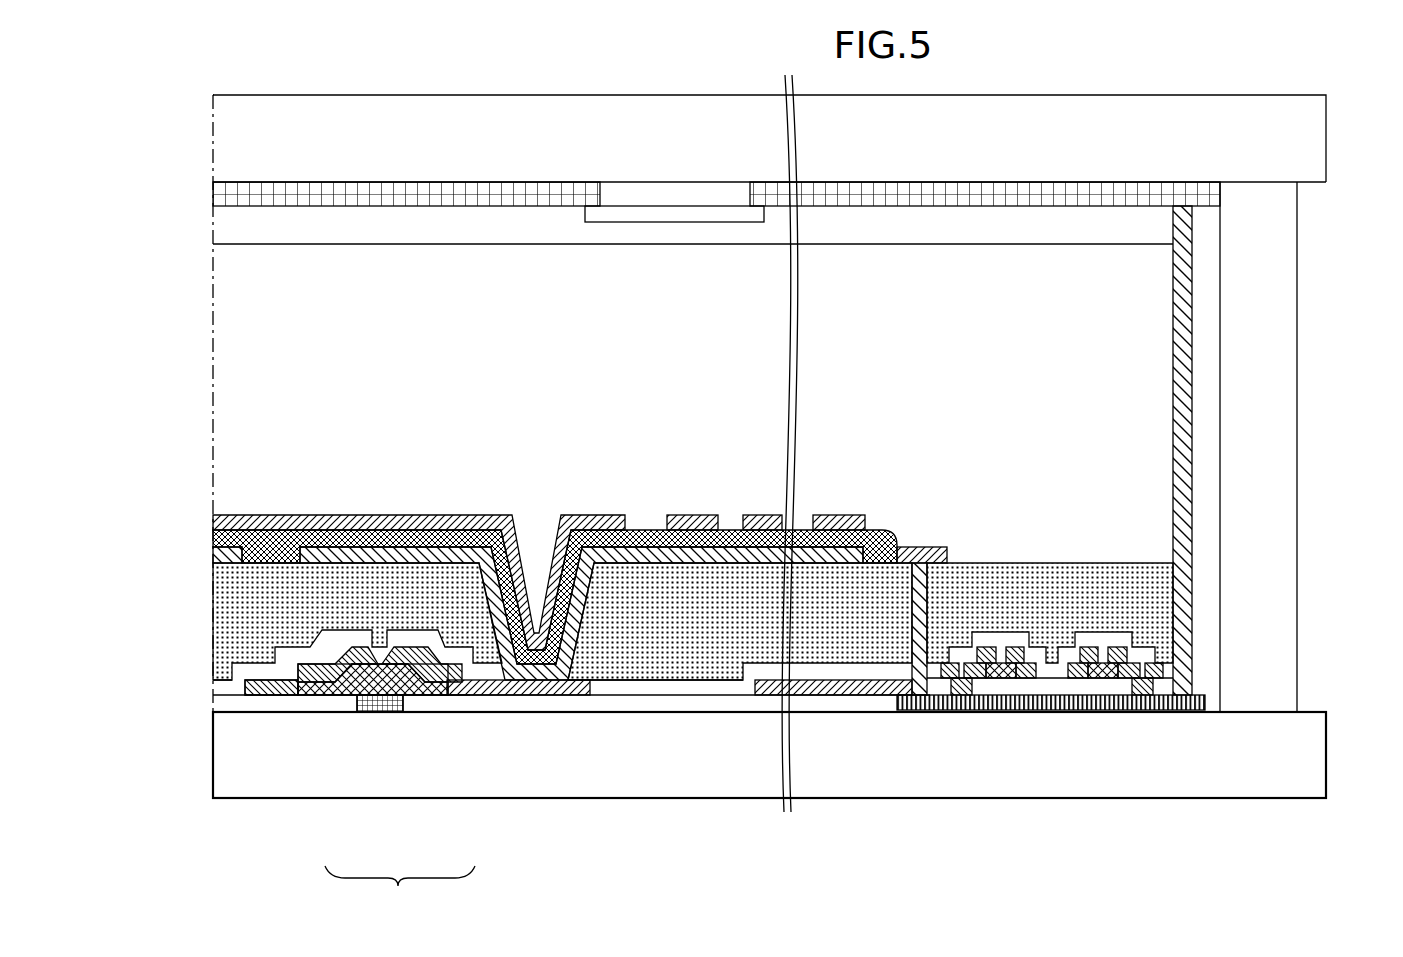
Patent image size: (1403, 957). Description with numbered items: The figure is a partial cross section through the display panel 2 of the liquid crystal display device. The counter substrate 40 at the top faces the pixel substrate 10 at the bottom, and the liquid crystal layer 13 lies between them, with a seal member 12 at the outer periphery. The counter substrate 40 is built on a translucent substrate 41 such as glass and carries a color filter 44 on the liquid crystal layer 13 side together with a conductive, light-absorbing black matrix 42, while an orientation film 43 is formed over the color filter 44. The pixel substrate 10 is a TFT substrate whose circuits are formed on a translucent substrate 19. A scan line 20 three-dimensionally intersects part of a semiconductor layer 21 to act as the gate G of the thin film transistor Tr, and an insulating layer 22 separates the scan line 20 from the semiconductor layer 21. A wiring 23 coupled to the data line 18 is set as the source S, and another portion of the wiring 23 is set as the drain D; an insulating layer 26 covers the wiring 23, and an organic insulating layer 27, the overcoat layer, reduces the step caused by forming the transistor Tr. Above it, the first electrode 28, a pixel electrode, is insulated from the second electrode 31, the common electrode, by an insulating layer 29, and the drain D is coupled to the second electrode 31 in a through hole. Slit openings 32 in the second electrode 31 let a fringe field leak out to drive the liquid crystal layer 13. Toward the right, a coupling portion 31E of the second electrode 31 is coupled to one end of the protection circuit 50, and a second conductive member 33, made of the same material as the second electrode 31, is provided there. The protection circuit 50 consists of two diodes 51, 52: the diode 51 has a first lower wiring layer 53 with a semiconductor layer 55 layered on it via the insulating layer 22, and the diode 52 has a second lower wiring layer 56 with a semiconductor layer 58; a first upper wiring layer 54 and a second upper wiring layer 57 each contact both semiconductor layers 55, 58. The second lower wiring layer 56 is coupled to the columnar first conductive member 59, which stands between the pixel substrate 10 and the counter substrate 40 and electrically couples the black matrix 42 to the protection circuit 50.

The display panel 2 is at (252, 66).
The pixel substrate 10 is at (1342, 752).
The seal member 12 is at (1268, 347).
The liquid crystal layer 13 is at (230, 352).
The data line 18 is at (262, 688).
The translucent substrate 19 is at (690, 705).
The scan line 20 is at (380, 712).
The semiconductor layer 21 is at (396, 668).
The insulating layer 22 is at (455, 697).
The wiring 23 is at (283, 697).
The insulating layer 26 is at (230, 690).
The insulating layer 27 is at (270, 590).
The first electrode 28 is at (418, 555).
The insulating layer 29 is at (365, 540).
The second electrode 31 is at (315, 522).
The coupling portion 31E is at (941, 544).
The slit openings 32 is at (656, 520).
The second conductive member 33 is at (918, 600).
The counter substrate 40 is at (1342, 138).
The translucent substrate 41 is at (312, 118).
The black matrix 42 is at (425, 185).
The orientation film 43 is at (482, 225).
The color filter 44 is at (672, 195).
The protection circuit 50 is at (1050, 590).
The diode 51 is at (990, 628).
The diode 52 is at (1103, 628).
The first lower wiring layer 53 is at (917, 712).
The first upper wiring layer 54 is at (960, 697).
The semiconductor layer 55 is at (994, 680).
The second lower wiring layer 56 is at (1156, 710).
The second upper wiring layer 57 is at (1020, 680).
The semiconductor layer 58 is at (1100, 680).
The first conductive member 59 is at (1192, 476).
The source S is at (355, 652).
The gate G is at (371, 708).
The drain D is at (405, 652).
The thin film transistor Tr is at (386, 788).